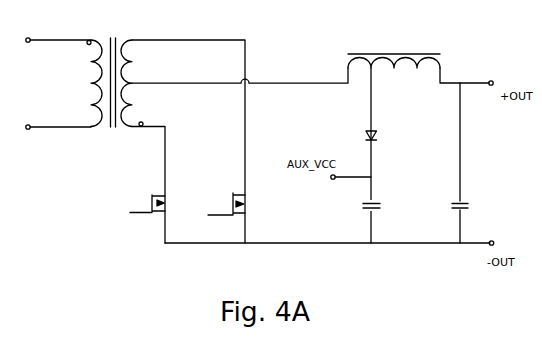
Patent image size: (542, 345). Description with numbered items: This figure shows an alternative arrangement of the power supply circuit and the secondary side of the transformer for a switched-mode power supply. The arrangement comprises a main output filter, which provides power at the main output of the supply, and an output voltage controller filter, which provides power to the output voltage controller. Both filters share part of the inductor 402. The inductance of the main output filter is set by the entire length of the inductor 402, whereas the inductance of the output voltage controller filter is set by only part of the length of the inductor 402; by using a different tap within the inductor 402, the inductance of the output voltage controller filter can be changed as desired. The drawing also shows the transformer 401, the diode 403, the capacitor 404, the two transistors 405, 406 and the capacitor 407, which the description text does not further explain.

The transformer 401 is at (144, 39).
The inductor 402 is at (384, 53).
The diode 403 is at (380, 133).
The auxiliary capacitor 404 is at (381, 200).
The synchronous rectifier transistor 405 is at (233, 192).
The synchronous rectifier transistor 406 is at (139, 196).
The output capacitor 407 is at (468, 200).